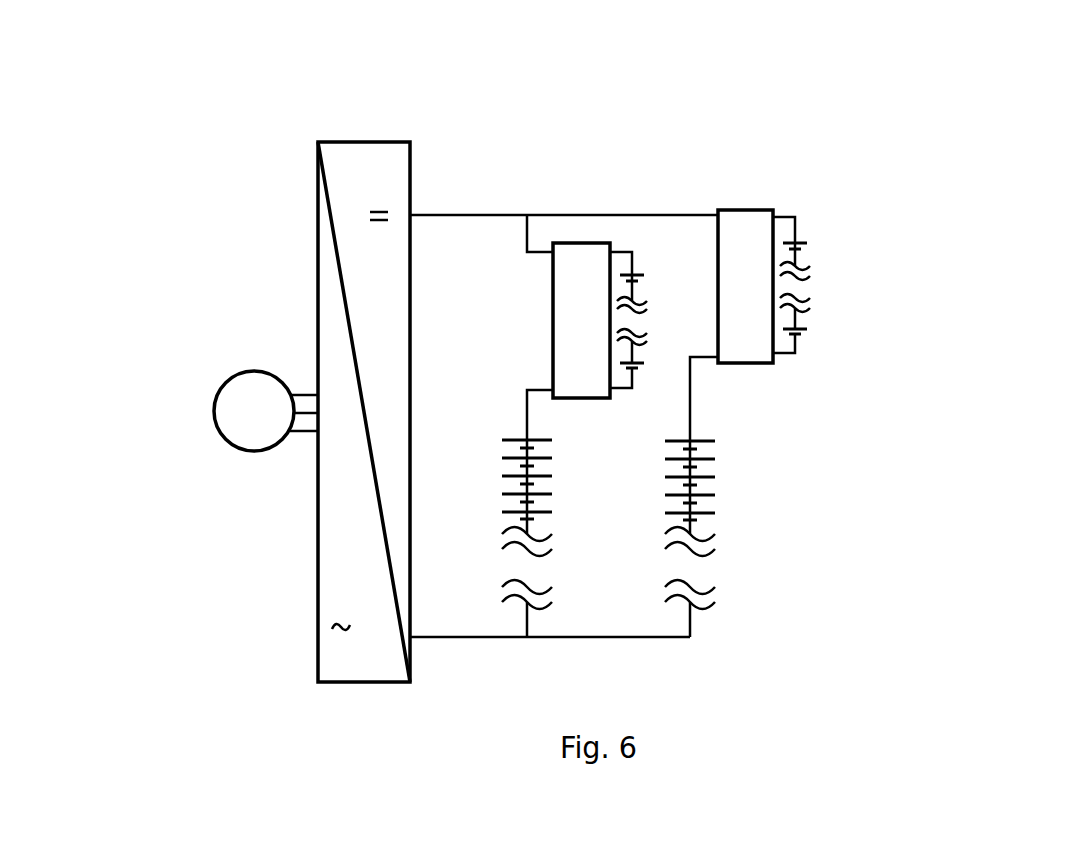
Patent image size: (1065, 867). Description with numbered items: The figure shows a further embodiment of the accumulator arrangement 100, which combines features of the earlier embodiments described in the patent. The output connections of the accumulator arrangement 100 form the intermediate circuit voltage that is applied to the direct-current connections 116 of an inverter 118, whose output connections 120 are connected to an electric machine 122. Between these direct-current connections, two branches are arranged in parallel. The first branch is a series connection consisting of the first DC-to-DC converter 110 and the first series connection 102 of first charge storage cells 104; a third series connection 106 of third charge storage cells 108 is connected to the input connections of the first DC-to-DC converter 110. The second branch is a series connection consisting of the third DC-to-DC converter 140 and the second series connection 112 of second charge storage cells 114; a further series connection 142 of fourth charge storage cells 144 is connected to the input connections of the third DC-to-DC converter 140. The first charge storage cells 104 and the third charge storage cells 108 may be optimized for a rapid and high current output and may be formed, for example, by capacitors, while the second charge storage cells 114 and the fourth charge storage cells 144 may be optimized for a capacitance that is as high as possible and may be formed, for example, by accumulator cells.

The accumulator arrangement 100 is at (912, 108).
The first series connection 102 is at (743, 559).
The first charge storage cells 104 is at (665, 450).
The third series connection 106 is at (878, 191).
The third charge storage cells 108 is at (812, 243).
The first DC-to-DC converter 110 is at (745, 240).
The second series connection 112 is at (569, 459).
The second charge storage cells 114 is at (498, 440).
The direct-current connections 116 is at (431, 374).
The inverter 118 is at (352, 155).
The output connections 120 is at (289, 355).
The electric machine 122 is at (232, 418).
The third DC-to-DC converter 140 is at (580, 265).
The third series connection 142 is at (617, 215).
The fourth charge storage cells 144 is at (648, 274).